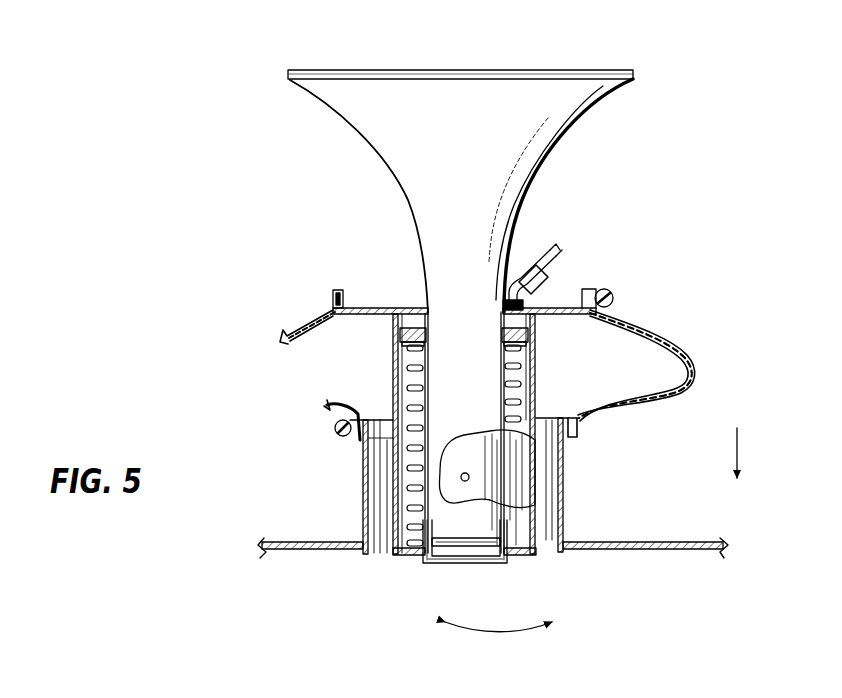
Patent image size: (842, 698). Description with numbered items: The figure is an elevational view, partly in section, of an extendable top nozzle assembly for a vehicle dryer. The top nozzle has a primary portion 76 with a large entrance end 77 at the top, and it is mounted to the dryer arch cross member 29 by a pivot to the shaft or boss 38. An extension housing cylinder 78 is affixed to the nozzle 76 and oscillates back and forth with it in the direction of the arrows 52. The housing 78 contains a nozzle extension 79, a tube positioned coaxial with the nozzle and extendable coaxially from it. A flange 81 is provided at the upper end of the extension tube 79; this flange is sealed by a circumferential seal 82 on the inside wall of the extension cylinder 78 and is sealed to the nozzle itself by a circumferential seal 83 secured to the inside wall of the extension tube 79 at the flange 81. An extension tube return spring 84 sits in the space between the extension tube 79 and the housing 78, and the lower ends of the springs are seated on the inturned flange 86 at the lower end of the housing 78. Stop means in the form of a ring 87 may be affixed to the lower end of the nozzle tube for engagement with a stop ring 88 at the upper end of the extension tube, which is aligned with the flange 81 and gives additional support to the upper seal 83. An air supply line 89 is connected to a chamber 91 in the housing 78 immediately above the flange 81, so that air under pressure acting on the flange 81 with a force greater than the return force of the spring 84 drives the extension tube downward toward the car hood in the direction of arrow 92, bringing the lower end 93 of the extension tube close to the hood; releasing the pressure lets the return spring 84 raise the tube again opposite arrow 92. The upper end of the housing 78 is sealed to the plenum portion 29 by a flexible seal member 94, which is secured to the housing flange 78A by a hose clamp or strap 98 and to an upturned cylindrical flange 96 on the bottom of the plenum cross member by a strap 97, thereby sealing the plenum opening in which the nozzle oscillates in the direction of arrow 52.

The dryer arch cross member 29 is at (234, 219).
The shaft or boss 38 is at (469, 476).
The arrows 52 is at (502, 631).
The primary portion 76 is at (538, 128).
The large entrance end 77 is at (592, 72).
The extension housing cylinder 78 is at (537, 367).
The housing flange 78A is at (350, 294).
The nozzle extension 79 is at (393, 369).
The flange 81 is at (400, 310).
The circumferential seal 82 is at (400, 335).
The circumferential seal 83 is at (433, 334).
The extension tube return spring 84 is at (408, 502).
The inturned flange 86 is at (407, 553).
The ring 87 is at (450, 540).
The stop ring 88 is at (503, 338).
The air supply line 89 is at (545, 268).
The chamber 91 is at (523, 322).
The arrow 92 is at (737, 437).
The lower end 93 is at (492, 565).
The flexible seal member 94 is at (303, 323).
The upturned cylindrical flange 96 is at (566, 450).
The strap 97 is at (340, 435).
The hose clamp or strap 98 is at (614, 299).